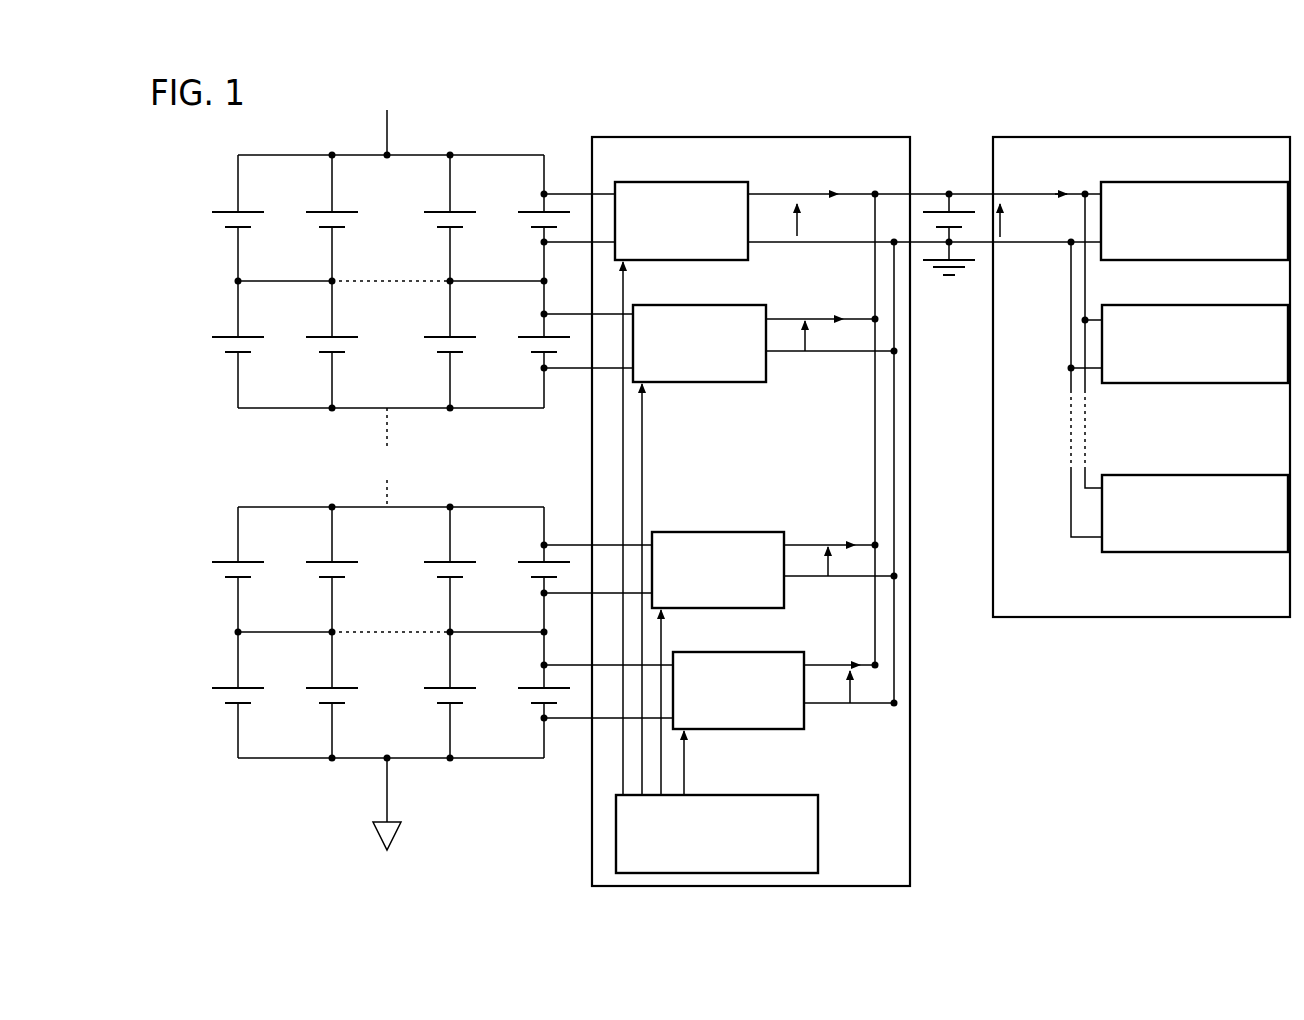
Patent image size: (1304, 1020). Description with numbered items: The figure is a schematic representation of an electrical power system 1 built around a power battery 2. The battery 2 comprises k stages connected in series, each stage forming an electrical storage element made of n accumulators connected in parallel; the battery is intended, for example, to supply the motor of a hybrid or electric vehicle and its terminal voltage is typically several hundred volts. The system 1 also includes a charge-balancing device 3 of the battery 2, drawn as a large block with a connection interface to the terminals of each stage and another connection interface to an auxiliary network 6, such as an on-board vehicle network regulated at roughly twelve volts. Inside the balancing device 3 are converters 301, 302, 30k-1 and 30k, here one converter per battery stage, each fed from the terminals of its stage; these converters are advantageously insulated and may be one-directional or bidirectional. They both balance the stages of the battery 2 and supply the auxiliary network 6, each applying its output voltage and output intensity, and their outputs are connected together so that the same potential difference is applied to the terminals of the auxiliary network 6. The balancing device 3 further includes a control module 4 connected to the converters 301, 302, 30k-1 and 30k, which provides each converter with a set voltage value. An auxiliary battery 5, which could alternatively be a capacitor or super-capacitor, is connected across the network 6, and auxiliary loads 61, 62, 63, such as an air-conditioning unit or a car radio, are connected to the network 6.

The electrical power system 1 is at (461, 99).
The power battery 2 is at (329, 132).
The charge-balancing device 3 is at (775, 136).
The converter 30k is at (702, 250).
The converter 30k-1 is at (670, 375).
The converter 302 is at (698, 602).
The converter 301 is at (718, 722).
The control module 4 is at (709, 863).
The auxiliary battery 5 is at (949, 191).
The auxiliary network 6 is at (1090, 136).
The auxiliary load 61 is at (1180, 250).
The auxiliary load 62 is at (1180, 375).
The auxiliary load 63 is at (1180, 545).